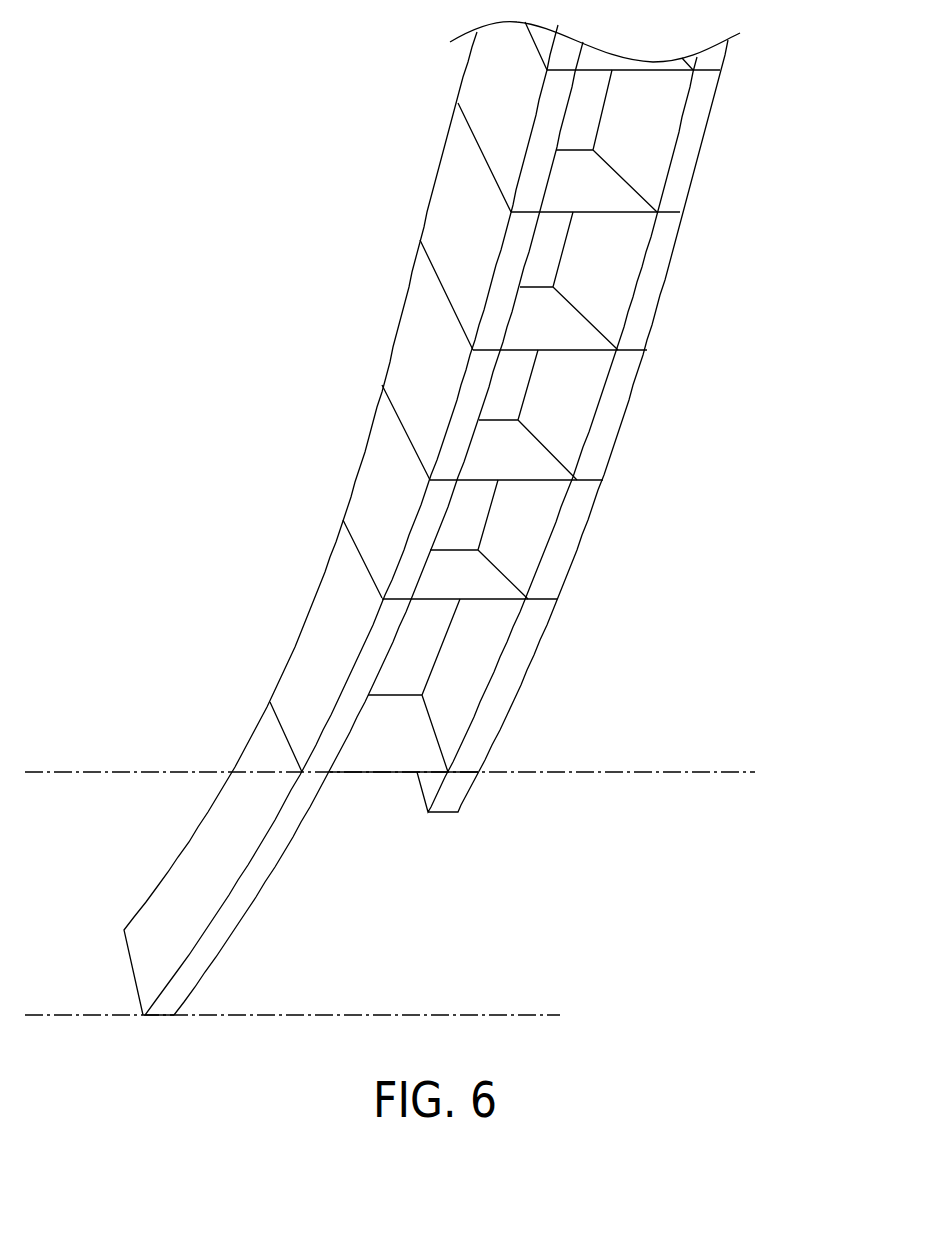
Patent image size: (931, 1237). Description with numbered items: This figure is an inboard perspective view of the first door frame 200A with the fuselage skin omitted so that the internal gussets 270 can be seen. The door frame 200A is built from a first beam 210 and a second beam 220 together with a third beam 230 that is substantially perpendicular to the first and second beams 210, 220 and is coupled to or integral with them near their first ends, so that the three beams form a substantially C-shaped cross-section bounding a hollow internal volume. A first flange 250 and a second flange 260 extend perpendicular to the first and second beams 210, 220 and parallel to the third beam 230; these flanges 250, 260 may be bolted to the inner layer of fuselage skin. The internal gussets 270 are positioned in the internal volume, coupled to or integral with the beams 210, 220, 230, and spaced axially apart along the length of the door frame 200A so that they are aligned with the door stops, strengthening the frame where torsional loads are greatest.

The first door frame 200A is at (466, 518).
The first beam 210 is at (582, 397).
The second beam 220 is at (428, 343).
The third beam 230 is at (515, 380).
The first flange 250 is at (610, 425).
The second flange 260 is at (450, 447).
The internal gusset 270 is at (570, 330).